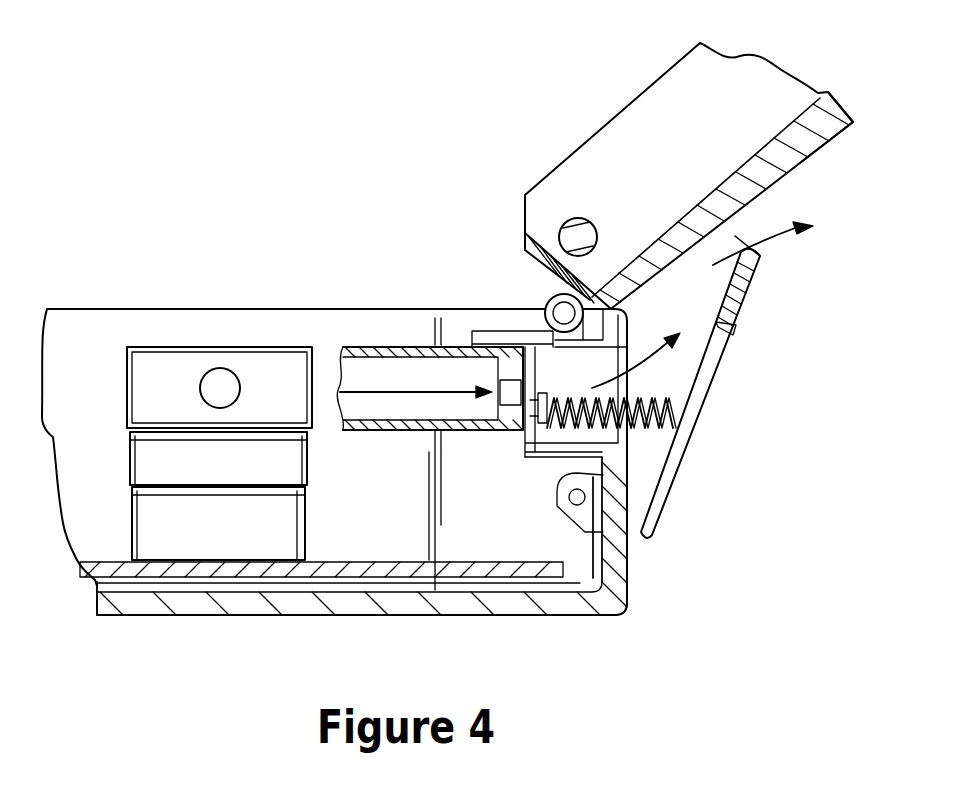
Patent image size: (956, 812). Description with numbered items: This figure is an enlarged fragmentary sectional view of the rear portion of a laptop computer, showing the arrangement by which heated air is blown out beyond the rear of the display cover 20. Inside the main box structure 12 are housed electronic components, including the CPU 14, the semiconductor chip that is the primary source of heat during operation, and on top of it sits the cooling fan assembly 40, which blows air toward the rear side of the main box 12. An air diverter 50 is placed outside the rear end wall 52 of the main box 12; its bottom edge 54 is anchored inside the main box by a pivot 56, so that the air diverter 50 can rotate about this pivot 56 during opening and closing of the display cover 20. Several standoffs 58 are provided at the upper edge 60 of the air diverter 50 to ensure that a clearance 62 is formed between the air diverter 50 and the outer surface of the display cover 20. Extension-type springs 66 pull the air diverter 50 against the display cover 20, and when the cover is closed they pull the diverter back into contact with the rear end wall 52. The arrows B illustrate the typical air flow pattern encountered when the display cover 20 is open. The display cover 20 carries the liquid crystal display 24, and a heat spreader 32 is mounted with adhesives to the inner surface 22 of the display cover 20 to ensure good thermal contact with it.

The main box structure 12 is at (93, 318).
The CPU 14 is at (140, 460).
The cooling fan assembly 40 is at (176, 365).
The arrows B is at (398, 392).
The display cover 20 is at (825, 147).
The inner surface 22 is at (812, 117).
The liquid crystal display 24 is at (683, 217).
The heat spreader 32 is at (773, 143).
The clearance 62 is at (747, 232).
The standoffs 58 is at (752, 247).
The upper edge 60 is at (760, 255).
The air diverter 50 is at (700, 413).
The springs 66 is at (638, 427).
The pivot 56 is at (568, 497).
The bottom edge 54 is at (633, 537).
The rear end wall 52 is at (628, 570).